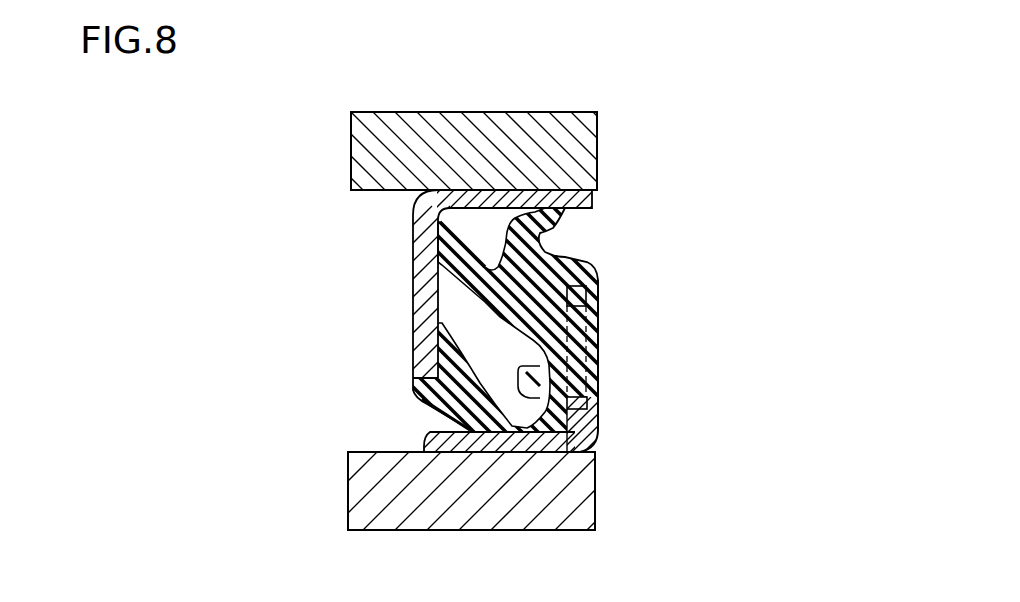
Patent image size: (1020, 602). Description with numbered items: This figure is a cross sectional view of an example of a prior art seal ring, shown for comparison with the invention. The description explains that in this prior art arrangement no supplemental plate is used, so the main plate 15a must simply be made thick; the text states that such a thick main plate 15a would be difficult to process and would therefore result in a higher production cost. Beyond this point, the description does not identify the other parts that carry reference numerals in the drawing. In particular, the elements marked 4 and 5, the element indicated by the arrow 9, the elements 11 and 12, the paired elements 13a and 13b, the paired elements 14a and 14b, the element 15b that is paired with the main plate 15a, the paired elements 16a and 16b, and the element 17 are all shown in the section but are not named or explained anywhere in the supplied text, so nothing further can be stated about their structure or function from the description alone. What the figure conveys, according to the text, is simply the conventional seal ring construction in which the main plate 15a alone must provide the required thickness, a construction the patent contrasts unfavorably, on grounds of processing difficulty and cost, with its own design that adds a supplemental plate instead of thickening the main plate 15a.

The lower member 4 is at (583, 482).
The upper member 5 is at (588, 146).
The seal assembly 9 is at (606, 244).
The elastic seal body 11 is at (492, 345).
The reinforcing ring 12 is at (408, 318).
The lower lip 13a is at (588, 456).
The upper lip 13b is at (425, 260).
The outer side lip 14a is at (599, 342).
The inner side lip 14b is at (425, 403).
The main plate 15a is at (581, 412).
The upper auxiliary lip 15b is at (420, 357).
The lower low-friction layer 16a is at (503, 453).
The upper low-friction layer 16b is at (593, 190).
The spring element 17 is at (587, 310).